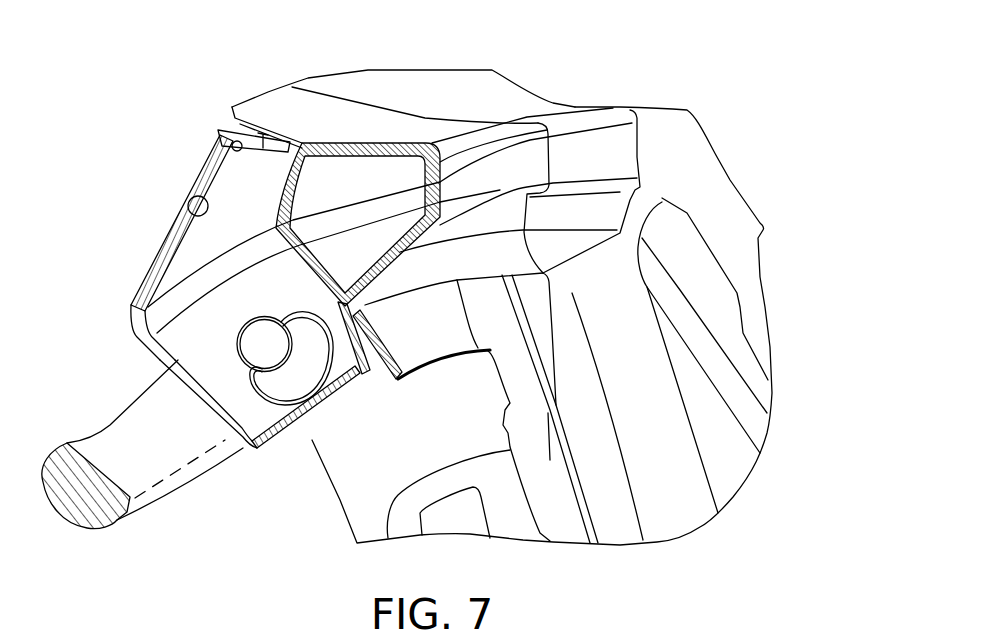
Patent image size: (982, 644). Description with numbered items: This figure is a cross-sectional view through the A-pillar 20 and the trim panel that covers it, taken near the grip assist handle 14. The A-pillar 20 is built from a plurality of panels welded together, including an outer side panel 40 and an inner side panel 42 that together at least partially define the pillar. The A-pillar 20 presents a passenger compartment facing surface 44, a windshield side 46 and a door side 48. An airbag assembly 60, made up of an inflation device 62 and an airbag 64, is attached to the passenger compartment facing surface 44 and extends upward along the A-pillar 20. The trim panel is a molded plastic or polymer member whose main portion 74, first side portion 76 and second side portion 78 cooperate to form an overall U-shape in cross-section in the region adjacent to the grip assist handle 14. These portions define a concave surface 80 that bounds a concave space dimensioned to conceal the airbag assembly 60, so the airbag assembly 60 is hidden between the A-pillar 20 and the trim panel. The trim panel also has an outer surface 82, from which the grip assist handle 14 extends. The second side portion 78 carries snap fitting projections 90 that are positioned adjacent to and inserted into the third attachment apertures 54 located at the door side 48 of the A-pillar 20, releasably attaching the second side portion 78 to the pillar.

The grip assist handle 14 is at (112, 423).
The A-pillar 20 is at (545, 86).
The outer side panel 40 is at (420, 128).
The inner side panel 42 is at (281, 200).
The passenger compartment facing surface 44 is at (277, 233).
The windshield side 46 is at (264, 97).
The door side 48 is at (426, 367).
The third attachment apertures 54 is at (378, 374).
The airbag assembly 60 is at (88, 328).
The inflation device 62 is at (257, 338).
The airbag 64 is at (273, 379).
The main portion 74 is at (188, 394).
The first side portion 76 is at (170, 241).
The second side portion 78 is at (340, 406).
The concave surface 80 is at (193, 197).
The outer surface 82 is at (130, 323).
The snap fitting projections 90 is at (395, 369).